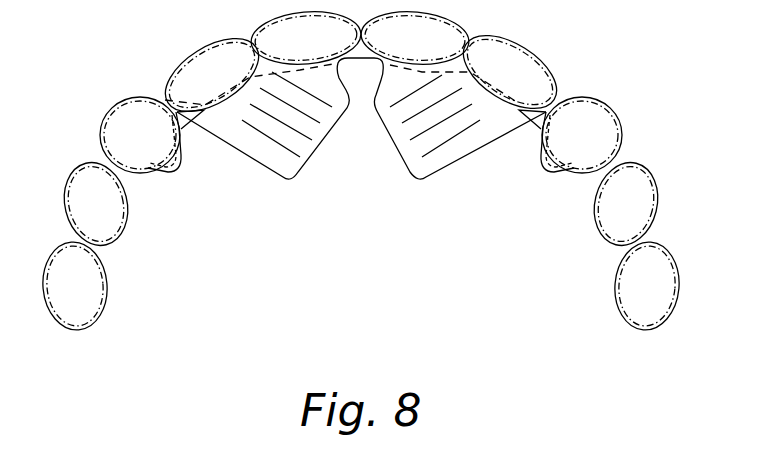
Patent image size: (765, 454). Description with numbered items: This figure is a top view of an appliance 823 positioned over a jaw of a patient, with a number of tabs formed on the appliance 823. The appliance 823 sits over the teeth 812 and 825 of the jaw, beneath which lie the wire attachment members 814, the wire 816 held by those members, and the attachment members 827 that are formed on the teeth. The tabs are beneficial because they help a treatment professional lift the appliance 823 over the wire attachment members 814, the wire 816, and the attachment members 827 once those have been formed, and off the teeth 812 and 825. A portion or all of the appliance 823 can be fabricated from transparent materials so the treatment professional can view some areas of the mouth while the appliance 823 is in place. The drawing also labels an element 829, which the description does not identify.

The teeth 812 is at (111, 124).
The wire attachment members 814 is at (161, 165).
The wire 816 is at (538, 130).
The appliance 823 is at (118, 112).
The teeth 825 is at (210, 63).
The attachment members 827 is at (401, 74).
The palatal expander plate 829 is at (428, 177).